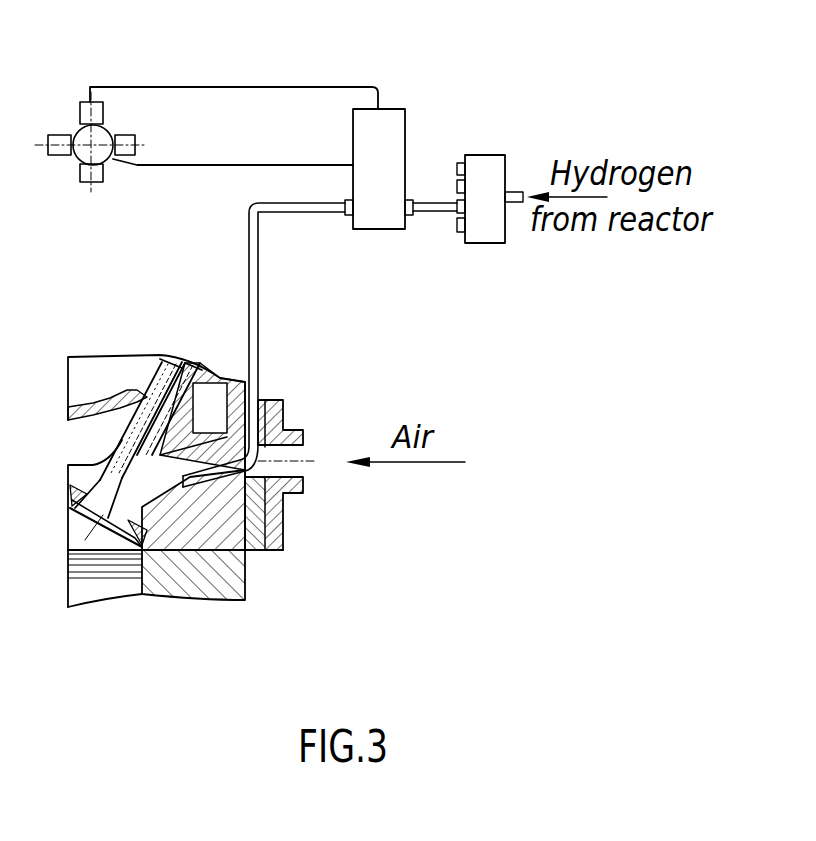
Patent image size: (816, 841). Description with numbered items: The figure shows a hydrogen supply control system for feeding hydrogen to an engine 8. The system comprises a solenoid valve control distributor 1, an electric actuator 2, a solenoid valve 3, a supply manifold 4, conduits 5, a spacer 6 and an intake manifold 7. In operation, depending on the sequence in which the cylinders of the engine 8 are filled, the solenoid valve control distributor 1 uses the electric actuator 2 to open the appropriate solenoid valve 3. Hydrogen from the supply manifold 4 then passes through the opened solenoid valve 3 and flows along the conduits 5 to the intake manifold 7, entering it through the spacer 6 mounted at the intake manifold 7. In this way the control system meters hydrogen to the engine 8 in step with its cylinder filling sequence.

The solenoid valve control distributor 1 is at (83, 132).
The electric actuator 2 is at (200, 113).
The solenoid valve 3 is at (370, 143).
The supply manifold 4 is at (477, 180).
The conduits 5 is at (258, 227).
The spacer 6 is at (250, 498).
The intake manifold 7 is at (270, 527).
The engine 8 is at (245, 552).